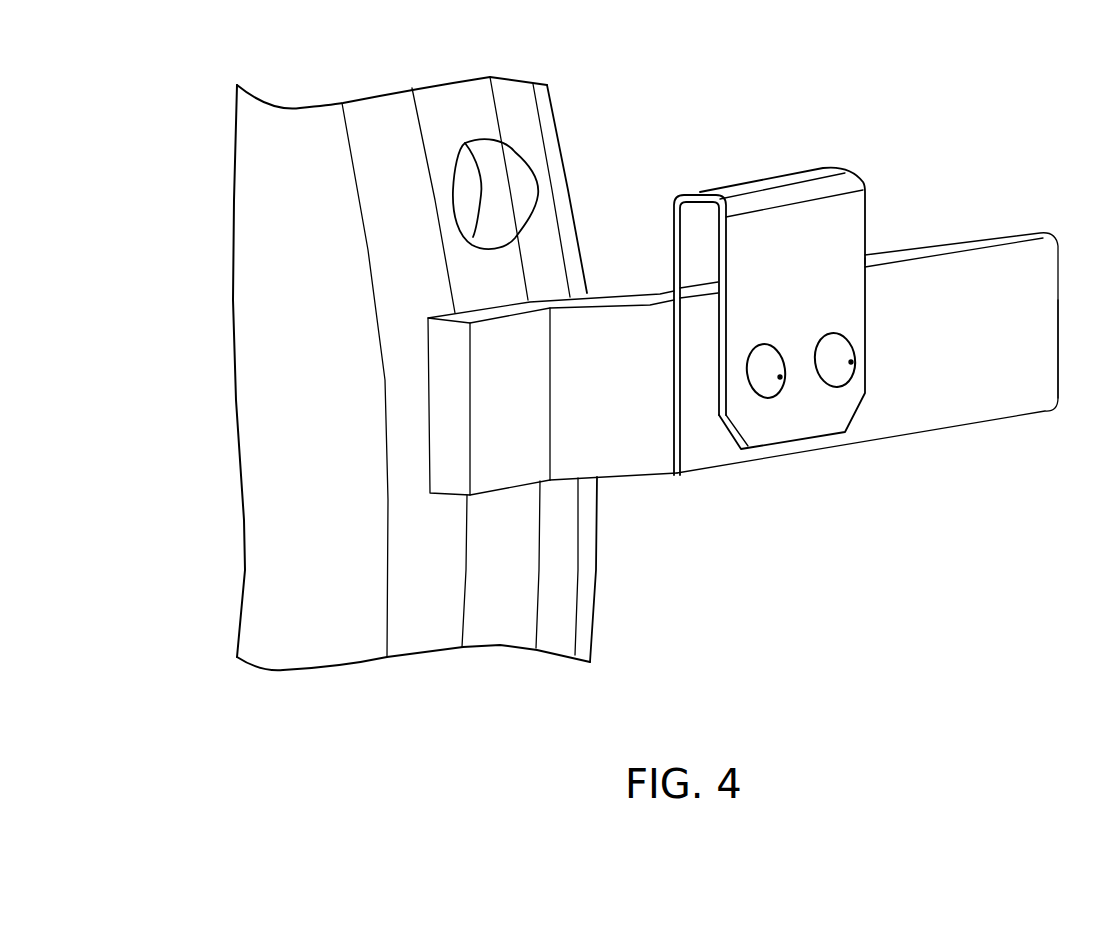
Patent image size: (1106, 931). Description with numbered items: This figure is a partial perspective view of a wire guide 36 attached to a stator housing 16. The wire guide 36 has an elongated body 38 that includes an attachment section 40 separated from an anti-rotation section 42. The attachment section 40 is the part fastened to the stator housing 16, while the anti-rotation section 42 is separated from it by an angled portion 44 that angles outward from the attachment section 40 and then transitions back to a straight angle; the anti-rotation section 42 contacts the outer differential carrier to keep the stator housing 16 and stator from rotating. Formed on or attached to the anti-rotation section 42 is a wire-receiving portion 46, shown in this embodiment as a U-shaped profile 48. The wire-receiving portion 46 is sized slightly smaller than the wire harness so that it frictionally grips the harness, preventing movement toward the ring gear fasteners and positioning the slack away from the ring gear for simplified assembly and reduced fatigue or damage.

The stator housing 16 is at (272, 189).
The wire guide 36 is at (947, 203).
The elongated body 38 is at (920, 293).
The attachment section 40 is at (503, 435).
The anti-rotation section 42 is at (1030, 397).
The angled portion 44 is at (627, 465).
The wire-receiving portion 46 is at (712, 260).
The U-shaped profile 48 is at (670, 228).